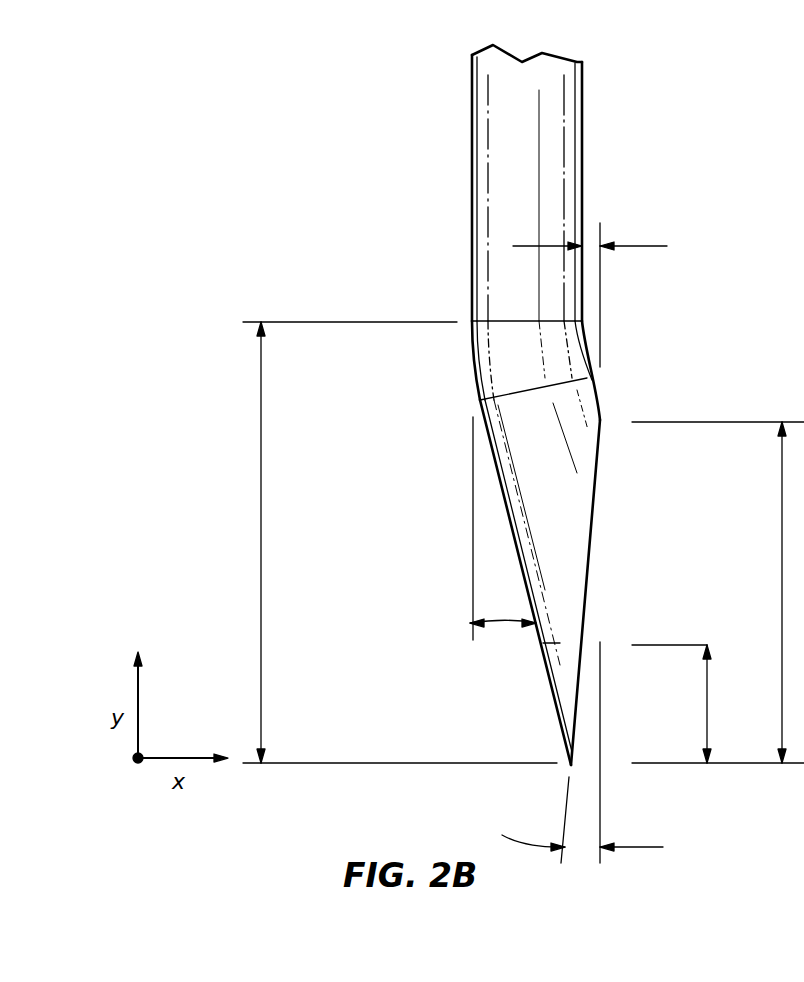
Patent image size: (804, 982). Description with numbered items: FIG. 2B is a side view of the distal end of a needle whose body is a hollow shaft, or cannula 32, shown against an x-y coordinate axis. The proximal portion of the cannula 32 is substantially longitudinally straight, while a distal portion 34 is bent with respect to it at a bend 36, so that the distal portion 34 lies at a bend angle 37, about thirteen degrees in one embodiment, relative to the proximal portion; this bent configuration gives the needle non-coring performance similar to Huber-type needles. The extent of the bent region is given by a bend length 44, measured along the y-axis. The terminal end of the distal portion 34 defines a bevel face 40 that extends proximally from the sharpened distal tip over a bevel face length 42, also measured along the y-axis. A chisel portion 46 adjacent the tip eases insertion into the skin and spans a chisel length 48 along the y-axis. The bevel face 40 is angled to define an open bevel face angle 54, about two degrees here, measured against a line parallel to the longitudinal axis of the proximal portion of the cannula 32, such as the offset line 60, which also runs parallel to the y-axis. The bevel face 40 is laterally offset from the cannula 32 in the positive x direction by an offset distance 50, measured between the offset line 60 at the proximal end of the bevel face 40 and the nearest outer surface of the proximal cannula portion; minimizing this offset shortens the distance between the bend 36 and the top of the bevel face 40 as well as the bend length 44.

The cannula 32 is at (502, 143).
The distal portion 34 is at (428, 507).
The bend 36 is at (473, 357).
The bend angle 37 is at (503, 623).
The bevel face 40 is at (600, 502).
The bevel face length 42 is at (782, 593).
The bend length 44 is at (261, 543).
The chisel portion 46 is at (575, 647).
The chisel length 48 is at (707, 707).
The offset distance 50 is at (600, 243).
The bevel face angle 54 is at (580, 845).
The offset line 60 is at (600, 310).